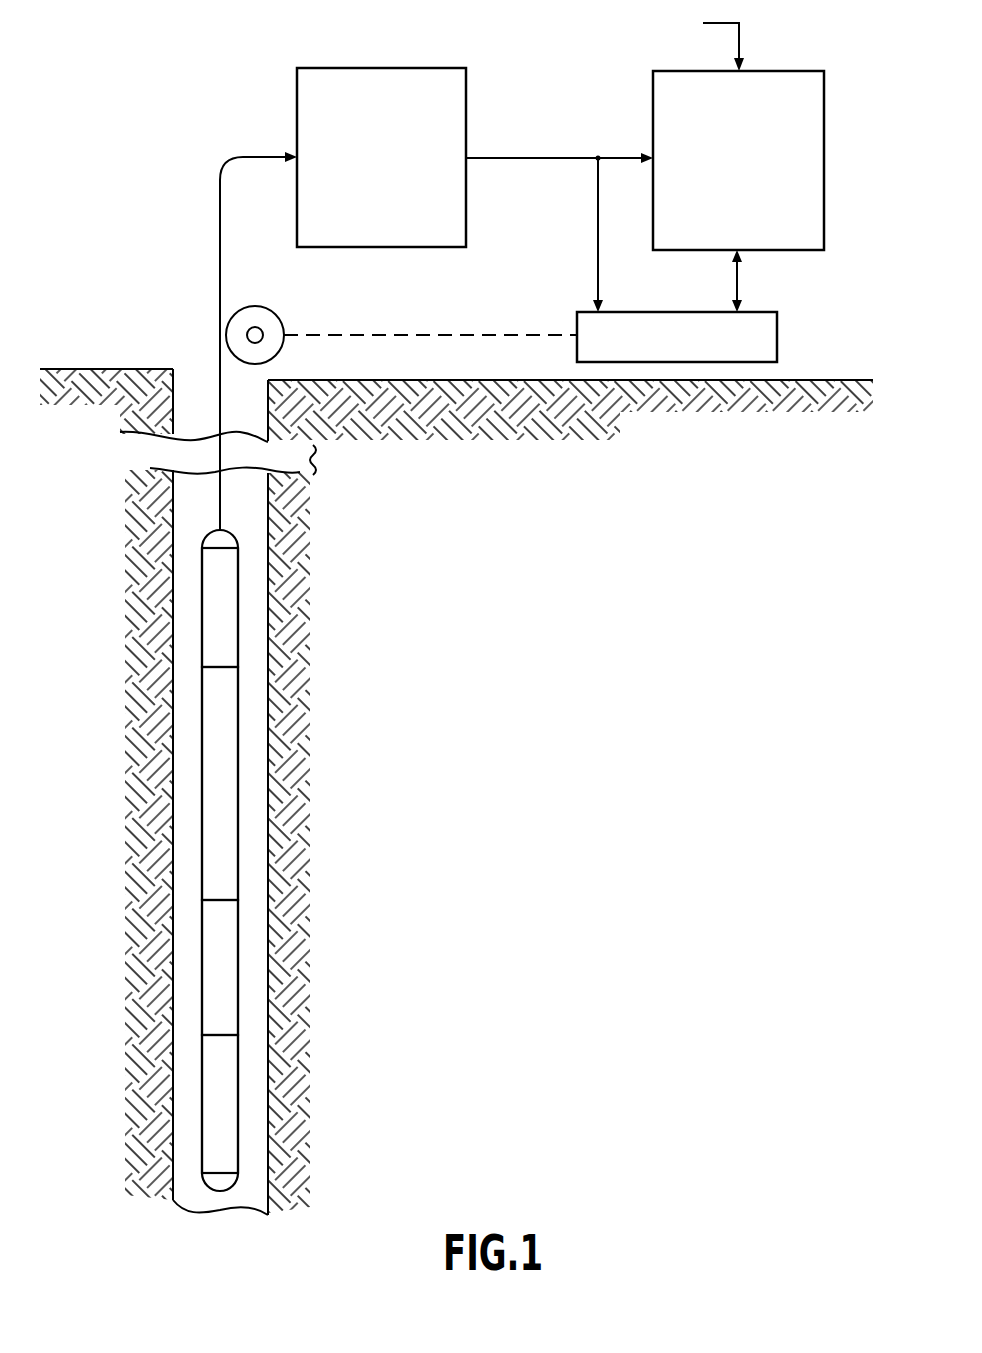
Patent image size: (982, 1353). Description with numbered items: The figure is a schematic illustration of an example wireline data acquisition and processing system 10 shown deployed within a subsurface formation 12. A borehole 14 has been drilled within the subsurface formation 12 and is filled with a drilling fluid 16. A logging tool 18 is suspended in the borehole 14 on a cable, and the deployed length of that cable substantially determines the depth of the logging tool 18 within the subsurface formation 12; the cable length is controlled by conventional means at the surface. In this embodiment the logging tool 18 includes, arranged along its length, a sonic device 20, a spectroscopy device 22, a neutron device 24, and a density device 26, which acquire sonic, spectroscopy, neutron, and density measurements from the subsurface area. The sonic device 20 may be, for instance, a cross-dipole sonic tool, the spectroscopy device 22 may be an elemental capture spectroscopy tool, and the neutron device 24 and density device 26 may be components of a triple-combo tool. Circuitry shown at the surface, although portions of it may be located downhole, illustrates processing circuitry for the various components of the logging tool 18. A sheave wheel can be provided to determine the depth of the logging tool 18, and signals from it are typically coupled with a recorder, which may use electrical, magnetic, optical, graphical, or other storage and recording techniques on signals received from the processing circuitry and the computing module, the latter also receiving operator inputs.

The wireline data acquisition and processing system 10 is at (187, 45).
The subsurface formation 12 is at (100, 369).
The borehole 14 is at (195, 360).
The drilling fluid 16 is at (190, 623).
The logging tool 18 is at (195, 485).
The sonic device 20 is at (237, 632).
The spectroscopy device 22 is at (237, 745).
The neutron device 24 is at (237, 932).
The density device 26 is at (237, 1068).